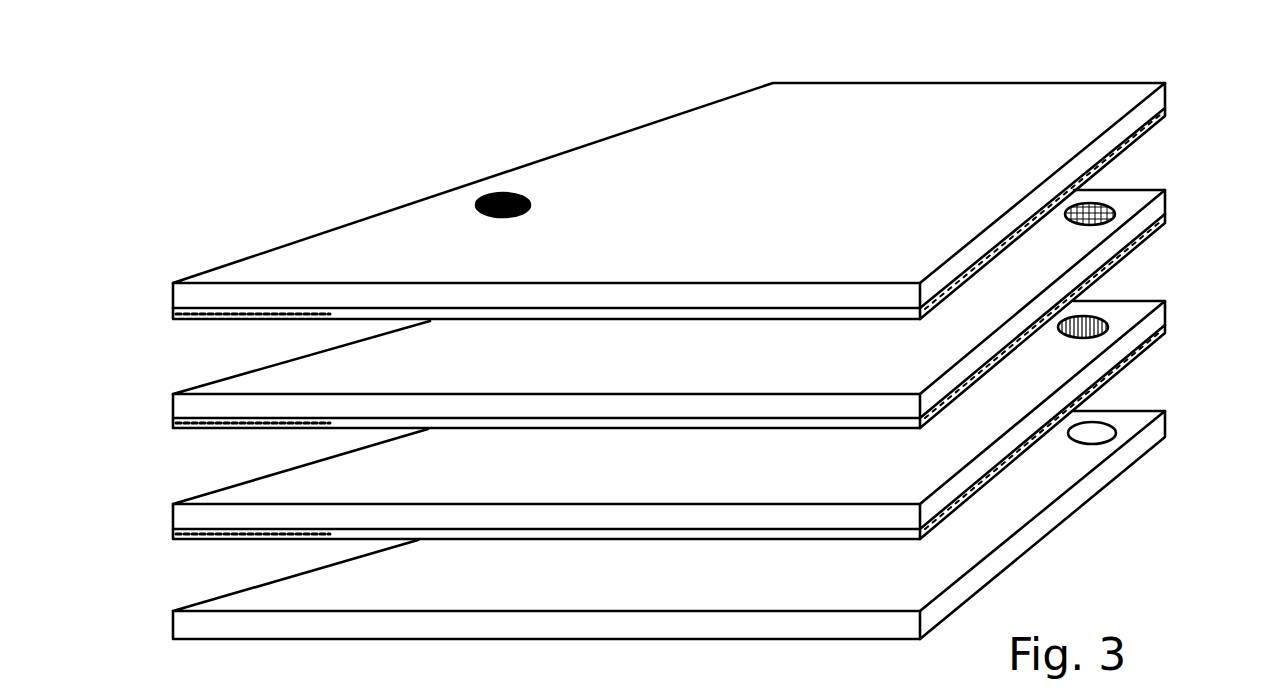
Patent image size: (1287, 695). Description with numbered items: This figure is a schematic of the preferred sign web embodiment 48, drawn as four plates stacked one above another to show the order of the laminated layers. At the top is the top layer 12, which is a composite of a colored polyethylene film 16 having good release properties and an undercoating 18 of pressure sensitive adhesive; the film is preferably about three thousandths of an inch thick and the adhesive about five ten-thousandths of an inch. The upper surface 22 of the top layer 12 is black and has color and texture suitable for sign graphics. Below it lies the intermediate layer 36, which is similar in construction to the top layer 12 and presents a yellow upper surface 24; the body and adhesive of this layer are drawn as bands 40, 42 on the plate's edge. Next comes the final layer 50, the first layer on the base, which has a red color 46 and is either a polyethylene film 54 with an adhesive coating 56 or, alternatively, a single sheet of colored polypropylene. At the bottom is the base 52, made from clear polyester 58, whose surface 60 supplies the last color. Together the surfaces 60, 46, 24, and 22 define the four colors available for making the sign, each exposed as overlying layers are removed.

The top layer 12 is at (1181, 84).
The polyethylene film 16 is at (172, 291).
The undercoating of pressure sensitive adhesive 18 is at (172, 316).
The upper surface 22 is at (500, 194).
The upper surface 24 is at (1098, 205).
The intermediate layer 36 is at (1183, 190).
The second plate body layer 40 is at (172, 405).
The second plate adhesive layer 42 is at (172, 424).
The red color surface 46 is at (1092, 318).
The web embodiment 48 is at (642, 90).
The final layer 50 is at (1184, 298).
The base 52 is at (1183, 411).
The polyethylene film 54 is at (172, 520).
The adhesive coating 56 is at (172, 534).
The clear polyester 58 is at (172, 622).
The surface 60 is at (1097, 432).